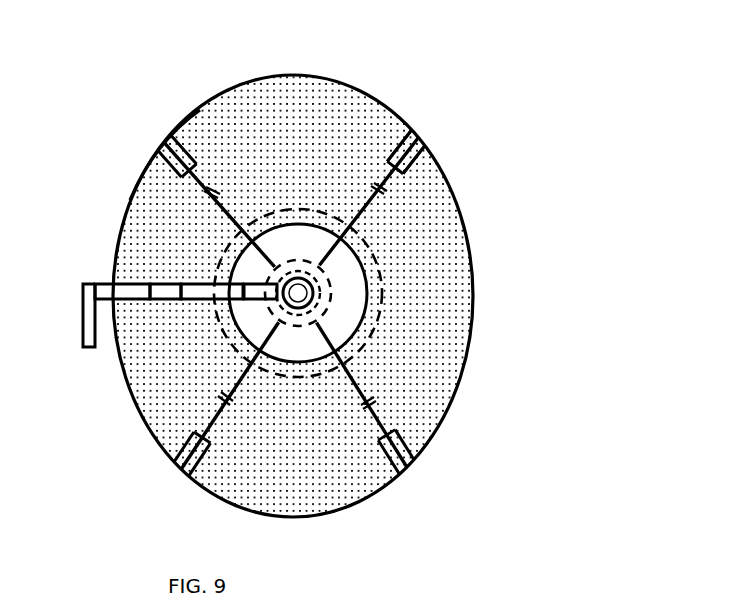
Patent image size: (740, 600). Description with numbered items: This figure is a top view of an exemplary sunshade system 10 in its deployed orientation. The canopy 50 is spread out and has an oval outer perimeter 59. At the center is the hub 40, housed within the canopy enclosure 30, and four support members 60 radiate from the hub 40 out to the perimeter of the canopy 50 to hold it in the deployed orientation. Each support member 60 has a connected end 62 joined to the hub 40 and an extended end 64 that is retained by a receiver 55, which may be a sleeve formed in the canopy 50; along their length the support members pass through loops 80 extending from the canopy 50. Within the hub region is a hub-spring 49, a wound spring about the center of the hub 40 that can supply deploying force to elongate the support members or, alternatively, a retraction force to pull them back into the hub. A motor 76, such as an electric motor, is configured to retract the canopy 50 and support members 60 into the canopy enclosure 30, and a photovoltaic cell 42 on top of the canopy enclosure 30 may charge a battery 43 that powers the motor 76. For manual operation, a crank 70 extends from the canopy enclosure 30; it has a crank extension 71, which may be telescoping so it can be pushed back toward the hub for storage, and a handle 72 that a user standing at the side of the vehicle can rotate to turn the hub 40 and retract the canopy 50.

The sunshade system 10 is at (484, 239).
The canopy enclosure 30 is at (353, 268).
The hub 40 is at (313, 367).
The photovoltaic cell 42 is at (353, 299).
The battery 43 is at (297, 365).
The hub-spring 49 is at (288, 262).
The canopy 50 is at (272, 132).
The receiver 55 is at (412, 130).
The outer perimeter 59 is at (470, 337).
The support member 60 is at (417, 140).
The connected end 62 is at (322, 268).
The extended end 64 is at (415, 132).
The crank 70 is at (108, 283).
The crank extension 71 is at (135, 284).
The handle 72 is at (80, 324).
The motor 76 is at (311, 288).
The loop 80 is at (375, 400).